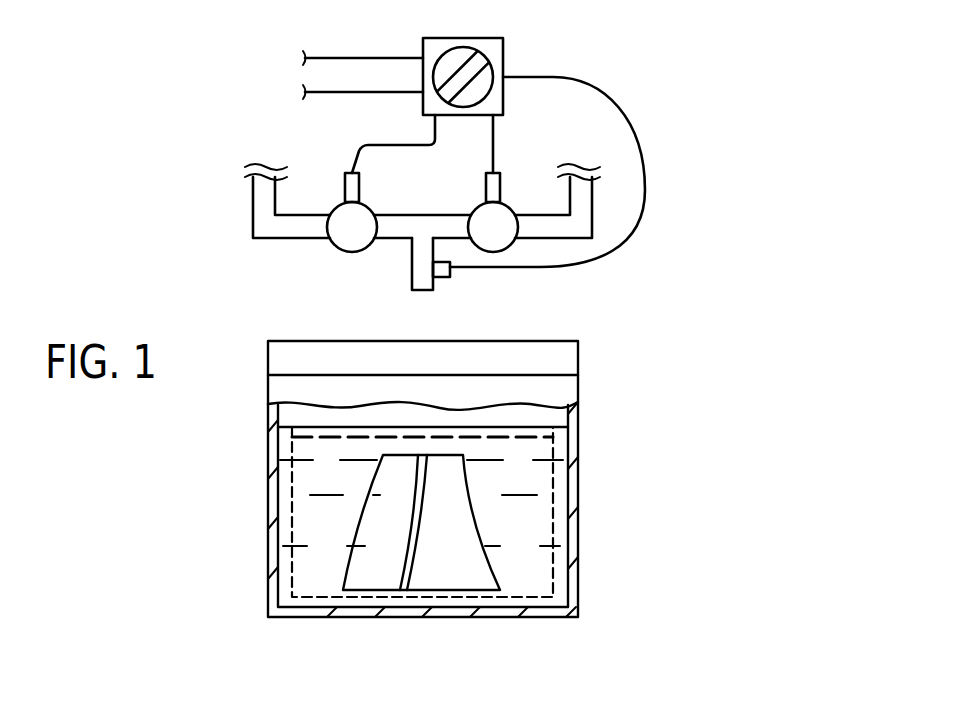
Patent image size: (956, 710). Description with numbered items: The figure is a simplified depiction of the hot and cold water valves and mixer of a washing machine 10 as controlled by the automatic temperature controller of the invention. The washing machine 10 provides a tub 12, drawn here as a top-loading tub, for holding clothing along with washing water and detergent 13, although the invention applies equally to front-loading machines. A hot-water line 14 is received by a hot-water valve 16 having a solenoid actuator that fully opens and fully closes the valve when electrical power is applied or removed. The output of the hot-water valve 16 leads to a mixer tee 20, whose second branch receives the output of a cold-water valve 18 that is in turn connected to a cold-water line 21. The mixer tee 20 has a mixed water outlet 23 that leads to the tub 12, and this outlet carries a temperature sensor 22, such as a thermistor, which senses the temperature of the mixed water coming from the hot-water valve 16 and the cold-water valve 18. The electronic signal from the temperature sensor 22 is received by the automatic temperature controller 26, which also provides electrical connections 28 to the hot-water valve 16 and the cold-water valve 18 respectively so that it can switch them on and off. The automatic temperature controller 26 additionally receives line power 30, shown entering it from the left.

The washing machine 10 is at (672, 94).
The tub 12 is at (268, 496).
The washing water and detergent 13 is at (537, 510).
The hot-water line 14 is at (253, 203).
The hot-water valve 16 is at (343, 227).
The cold-water valve 18 is at (500, 243).
The mixer tee 20 is at (418, 223).
The cold-water line 21 is at (584, 202).
The temperature sensor 22 is at (447, 277).
The mixed water outlet 23 is at (422, 277).
The automatic temperature controller 26 is at (482, 38).
The electrical connections 28 is at (492, 152).
The line power 30 is at (370, 92).